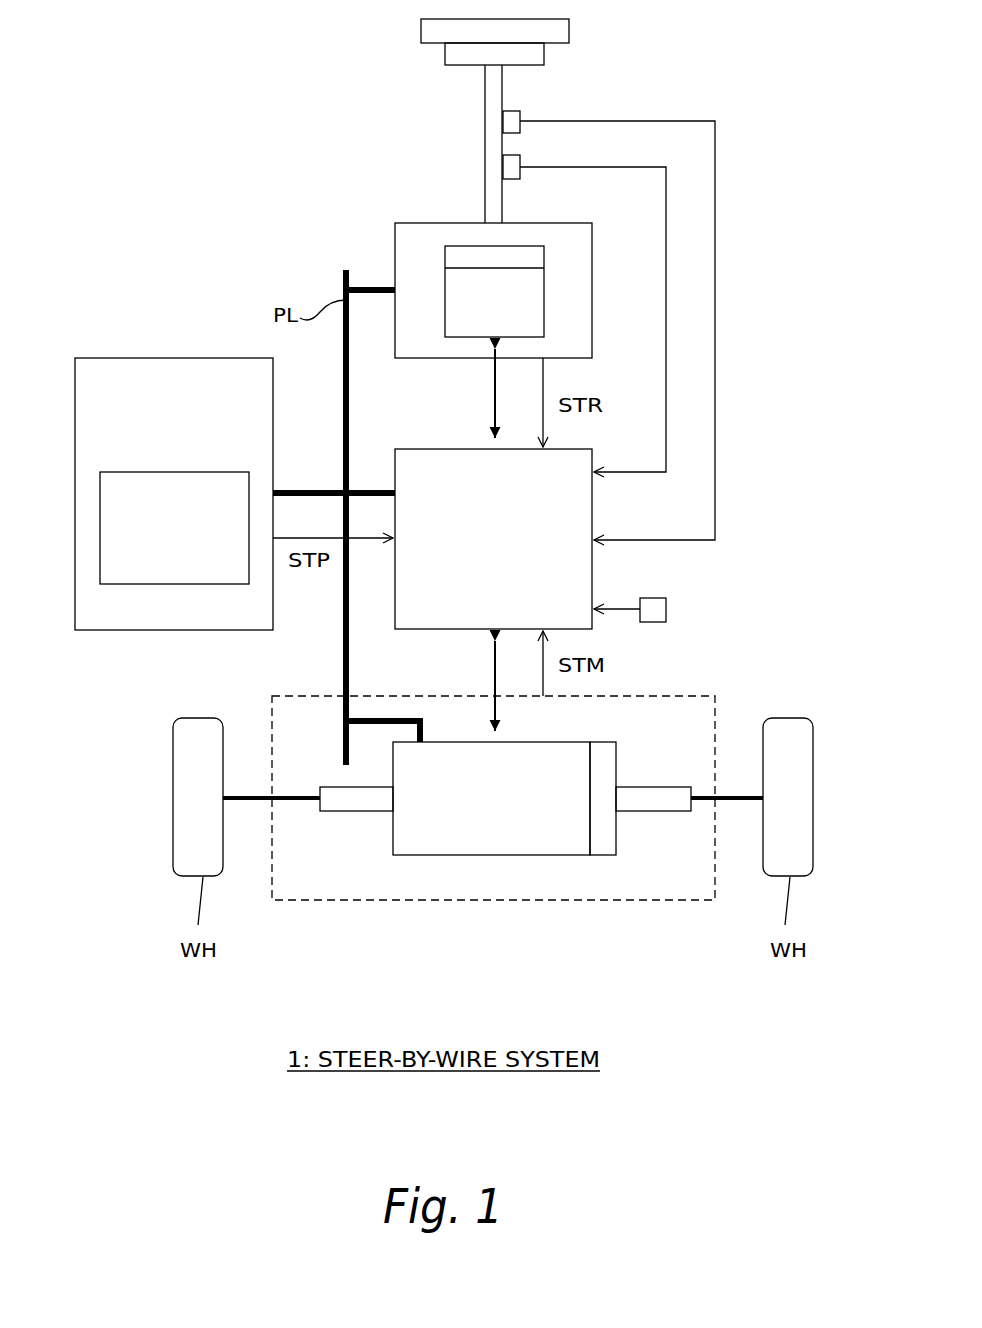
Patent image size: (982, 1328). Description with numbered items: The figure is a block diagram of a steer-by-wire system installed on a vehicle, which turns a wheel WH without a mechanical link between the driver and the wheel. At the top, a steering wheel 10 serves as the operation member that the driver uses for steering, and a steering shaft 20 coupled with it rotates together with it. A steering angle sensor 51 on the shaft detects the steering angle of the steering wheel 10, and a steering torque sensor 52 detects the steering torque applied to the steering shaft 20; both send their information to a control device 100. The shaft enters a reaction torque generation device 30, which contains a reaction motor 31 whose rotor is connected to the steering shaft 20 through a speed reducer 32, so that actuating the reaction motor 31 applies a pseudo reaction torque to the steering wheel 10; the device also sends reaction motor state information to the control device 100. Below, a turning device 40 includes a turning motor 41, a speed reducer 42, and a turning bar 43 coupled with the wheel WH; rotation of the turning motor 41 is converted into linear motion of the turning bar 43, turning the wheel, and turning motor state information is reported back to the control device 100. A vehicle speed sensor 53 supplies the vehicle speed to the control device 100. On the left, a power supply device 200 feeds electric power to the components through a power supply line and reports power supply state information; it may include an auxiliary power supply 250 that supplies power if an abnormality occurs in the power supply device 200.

The steering wheel 10 is at (421, 33).
The steering shaft 20 is at (485, 85).
The reaction torque generation device 30 is at (435, 223).
The reaction motor 31 is at (445, 290).
The speed reducer 32 is at (545, 262).
The turning device 40 is at (488, 902).
The turning motor 41 is at (445, 856).
The speed reducer 42 is at (605, 856).
The turning bar 43 is at (363, 813).
The steering angle sensor 51 is at (503, 124).
The steering torque sensor 52 is at (503, 169).
The vehicle speed sensor 53 is at (666, 612).
The control device 100 is at (430, 449).
The power supply device 200 is at (124, 358).
The auxiliary power supply 250 is at (135, 472).